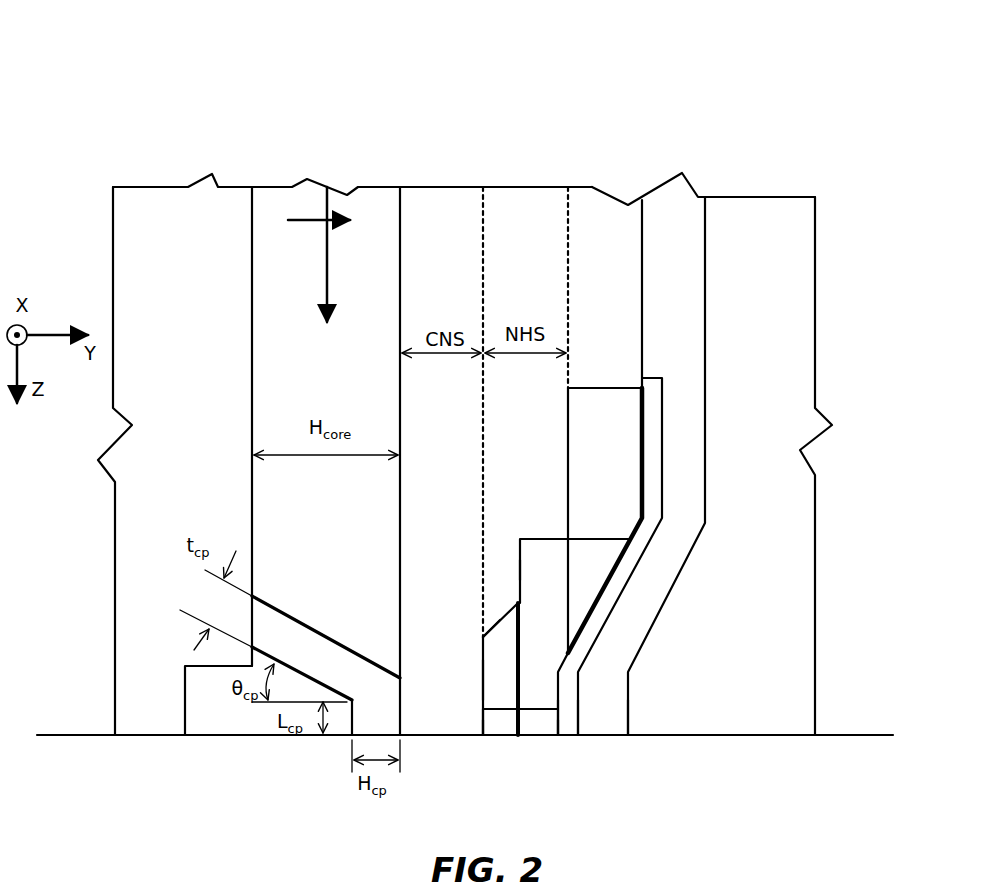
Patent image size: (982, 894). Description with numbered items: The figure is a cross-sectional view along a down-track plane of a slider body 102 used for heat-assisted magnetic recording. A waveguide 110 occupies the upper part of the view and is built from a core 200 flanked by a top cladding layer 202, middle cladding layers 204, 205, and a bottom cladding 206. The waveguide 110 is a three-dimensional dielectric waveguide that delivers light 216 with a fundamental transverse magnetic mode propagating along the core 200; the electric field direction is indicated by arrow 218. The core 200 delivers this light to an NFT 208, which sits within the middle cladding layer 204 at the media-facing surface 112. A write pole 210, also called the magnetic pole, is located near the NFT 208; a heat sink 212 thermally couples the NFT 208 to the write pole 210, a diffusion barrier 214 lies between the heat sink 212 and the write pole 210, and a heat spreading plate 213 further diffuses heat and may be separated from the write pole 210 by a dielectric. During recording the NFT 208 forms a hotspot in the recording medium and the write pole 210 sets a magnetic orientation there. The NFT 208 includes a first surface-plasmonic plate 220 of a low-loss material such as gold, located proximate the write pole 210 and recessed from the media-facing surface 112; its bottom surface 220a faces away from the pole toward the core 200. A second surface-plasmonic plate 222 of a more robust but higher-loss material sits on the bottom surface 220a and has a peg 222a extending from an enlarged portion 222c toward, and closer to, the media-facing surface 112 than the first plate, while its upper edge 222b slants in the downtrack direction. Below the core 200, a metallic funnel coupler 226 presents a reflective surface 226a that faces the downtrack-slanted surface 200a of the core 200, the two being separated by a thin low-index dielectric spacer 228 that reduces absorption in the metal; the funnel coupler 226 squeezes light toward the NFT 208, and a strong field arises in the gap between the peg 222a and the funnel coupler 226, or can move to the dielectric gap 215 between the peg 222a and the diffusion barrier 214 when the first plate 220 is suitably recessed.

The slider body 102 is at (256, 58).
The waveguide 110 is at (635, 122).
The media-facing surface 112 is at (852, 736).
The core 200 is at (267, 193).
The downtrack-slanted surface 200a is at (370, 657).
The top cladding layer 202 is at (580, 195).
The middle cladding layer 204 is at (418, 196).
The middle cladding layer 205 is at (497, 190).
The bottom cladding 206 is at (192, 197).
The NFT 208 is at (557, 750).
The write pole 210 is at (608, 726).
The heat sink 212 is at (607, 553).
The heat spreading plate 213 is at (615, 387).
The diffusion barrier 214 is at (570, 730).
The dielectric gap 215 is at (547, 727).
The light 216 is at (330, 241).
The electric field arrow 218 is at (300, 224).
The first surface-plasmonic plate 220 is at (552, 542).
The bottom surface 220a is at (518, 570).
The second surface-plasmonic plate 222 is at (483, 655).
The peg 222a is at (497, 725).
The upper edge 222b is at (483, 620).
The enlarged portion 222c is at (490, 682).
The funnel coupler 226 is at (225, 725).
The reflective surface 226a is at (327, 686).
The dielectric spacer 228 is at (320, 652).